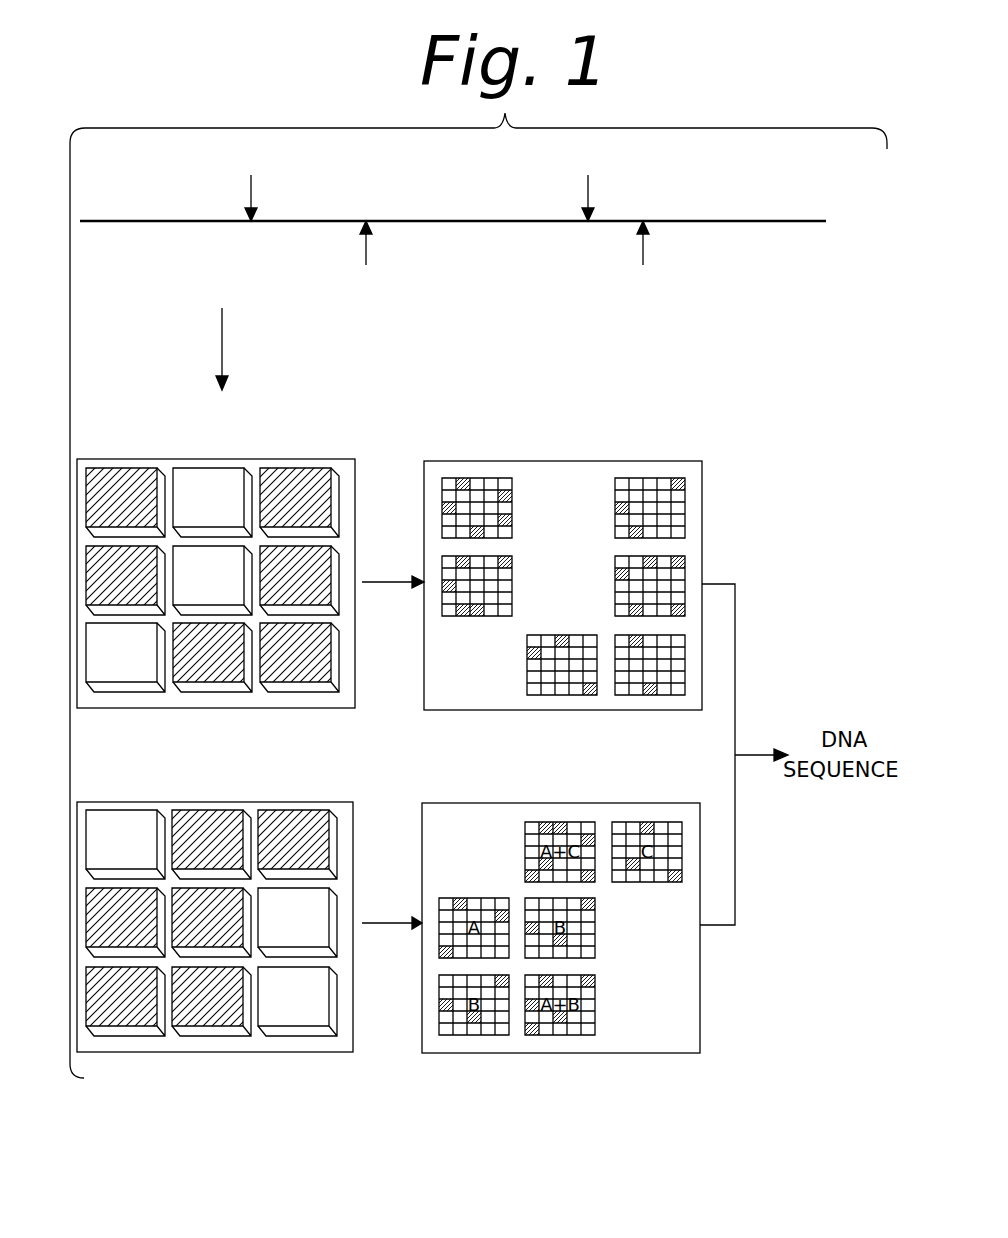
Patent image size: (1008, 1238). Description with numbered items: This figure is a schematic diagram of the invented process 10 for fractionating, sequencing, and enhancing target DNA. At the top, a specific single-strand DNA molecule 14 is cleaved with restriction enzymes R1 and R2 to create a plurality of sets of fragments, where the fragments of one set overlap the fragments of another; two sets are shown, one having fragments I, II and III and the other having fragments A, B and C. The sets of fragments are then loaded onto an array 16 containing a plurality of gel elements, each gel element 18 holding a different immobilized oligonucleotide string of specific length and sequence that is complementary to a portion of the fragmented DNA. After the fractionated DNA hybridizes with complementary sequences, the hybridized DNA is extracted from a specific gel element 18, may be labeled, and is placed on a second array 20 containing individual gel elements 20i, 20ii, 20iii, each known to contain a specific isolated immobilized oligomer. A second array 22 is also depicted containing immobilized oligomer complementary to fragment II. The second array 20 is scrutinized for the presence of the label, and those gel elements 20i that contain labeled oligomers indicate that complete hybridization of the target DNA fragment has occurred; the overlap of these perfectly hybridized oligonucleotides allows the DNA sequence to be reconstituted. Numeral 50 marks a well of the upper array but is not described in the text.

The process for fractionating, sequencing, and enhancing target DNA 10 is at (215, 974).
The single-strand DNA molecule 14 is at (790, 223).
The array 16 is at (216, 549).
The gel element 18 is at (197, 825).
The second array 20 is at (540, 579).
The gel element 20i is at (514, 497).
The gel element 20ii is at (444, 512).
The gel element 20iii is at (513, 523).
The second array 22 is at (671, 477).
The reaction well 50 is at (165, 460).